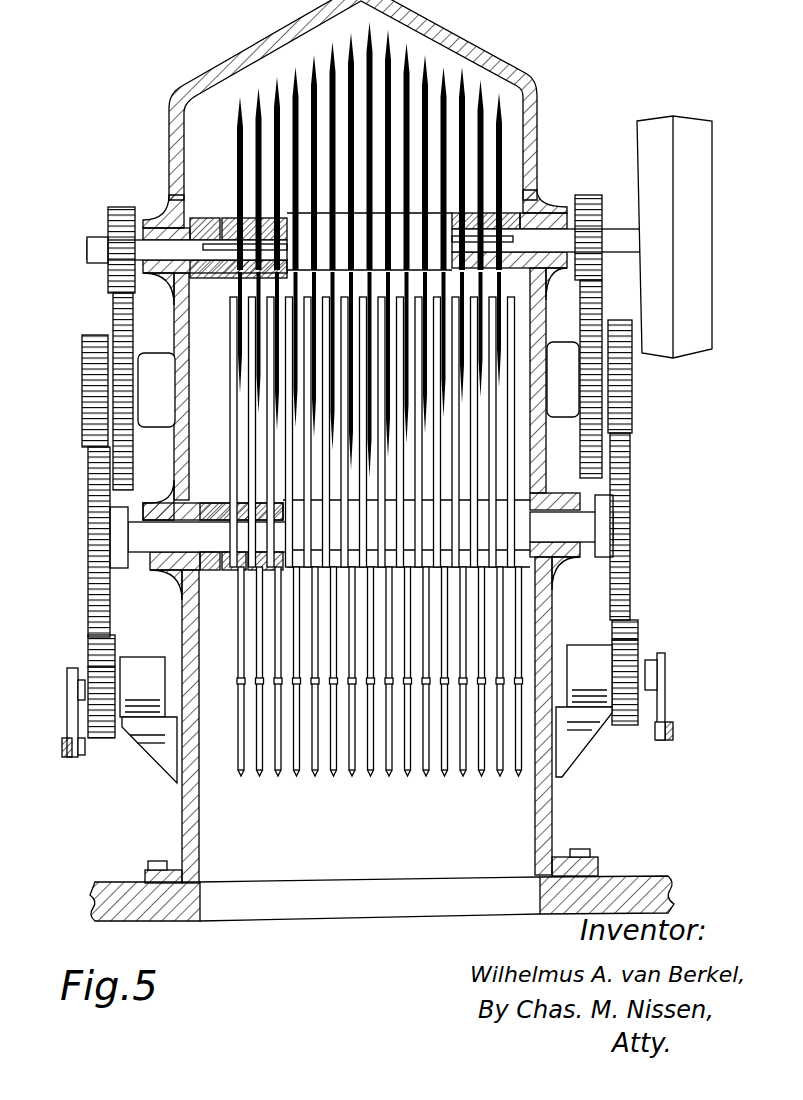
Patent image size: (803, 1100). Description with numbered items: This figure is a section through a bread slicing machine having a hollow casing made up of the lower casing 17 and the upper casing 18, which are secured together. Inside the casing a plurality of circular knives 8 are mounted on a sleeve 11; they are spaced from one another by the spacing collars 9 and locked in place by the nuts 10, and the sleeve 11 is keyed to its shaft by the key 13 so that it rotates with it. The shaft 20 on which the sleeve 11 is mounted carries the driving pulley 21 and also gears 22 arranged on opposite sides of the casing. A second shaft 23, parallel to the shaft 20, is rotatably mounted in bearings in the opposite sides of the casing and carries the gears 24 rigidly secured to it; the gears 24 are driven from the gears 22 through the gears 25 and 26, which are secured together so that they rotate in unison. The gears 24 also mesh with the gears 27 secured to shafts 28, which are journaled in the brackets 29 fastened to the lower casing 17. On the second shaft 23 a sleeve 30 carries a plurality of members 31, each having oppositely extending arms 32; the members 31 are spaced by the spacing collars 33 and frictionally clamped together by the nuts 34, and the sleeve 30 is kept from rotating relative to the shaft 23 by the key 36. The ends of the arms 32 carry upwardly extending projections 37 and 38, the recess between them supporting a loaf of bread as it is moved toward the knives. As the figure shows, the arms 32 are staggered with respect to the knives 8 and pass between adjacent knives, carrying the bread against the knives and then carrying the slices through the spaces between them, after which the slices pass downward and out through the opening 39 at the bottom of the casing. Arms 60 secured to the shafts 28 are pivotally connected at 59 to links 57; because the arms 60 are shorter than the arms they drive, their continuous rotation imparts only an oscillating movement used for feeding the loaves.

The circular knives 8 is at (425, 72).
The spacing collars 9 is at (490, 212).
The nuts 10 is at (206, 218).
The sleeve 11 is at (231, 218).
The key 13 is at (237, 250).
The lower casing 17 is at (549, 802).
The upper casing 18 is at (538, 82).
The shaft 20 is at (96, 242).
The driving pulley 21 is at (653, 126).
The gears 22 is at (120, 268).
The second shaft 23 is at (180, 540).
The gears 24 is at (95, 548).
The gears 25 is at (113, 308).
The gears 26 is at (88, 367).
The gears 27 is at (95, 648).
The shafts 28 is at (92, 665).
The brackets 29 is at (163, 762).
The sleeve 30 is at (240, 572).
The members 31 is at (262, 500).
The arms 32 is at (250, 400).
The spacing collars 33 is at (283, 580).
The nuts 34 is at (248, 498).
The key 36 is at (262, 575).
The projection 37 is at (297, 770).
The projection 38 is at (279, 688).
The opening 39 is at (268, 870).
The links 57 is at (62, 748).
The pivot 59 is at (82, 757).
The arms 60 is at (67, 704).